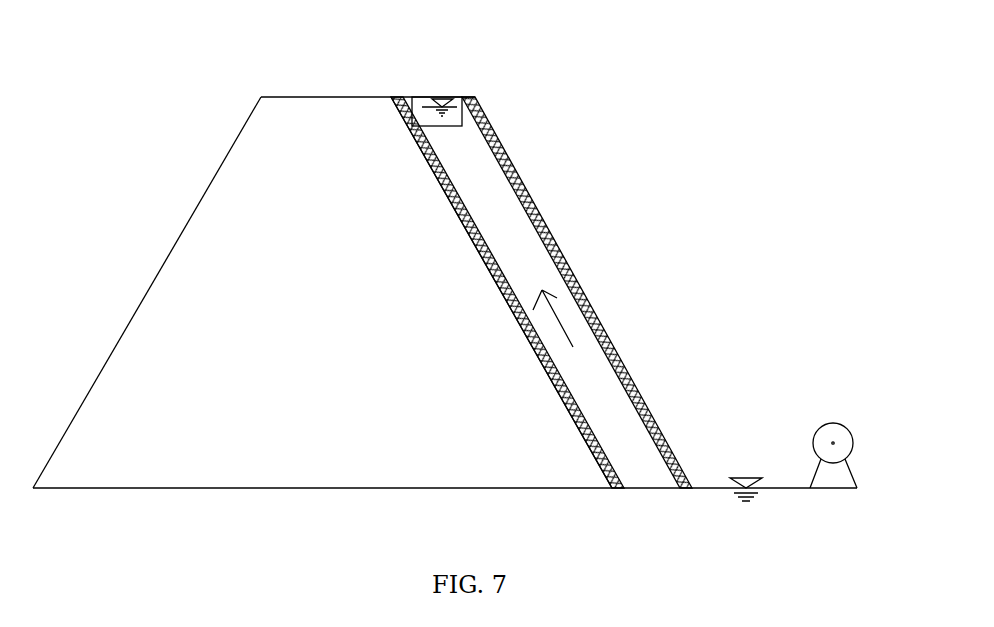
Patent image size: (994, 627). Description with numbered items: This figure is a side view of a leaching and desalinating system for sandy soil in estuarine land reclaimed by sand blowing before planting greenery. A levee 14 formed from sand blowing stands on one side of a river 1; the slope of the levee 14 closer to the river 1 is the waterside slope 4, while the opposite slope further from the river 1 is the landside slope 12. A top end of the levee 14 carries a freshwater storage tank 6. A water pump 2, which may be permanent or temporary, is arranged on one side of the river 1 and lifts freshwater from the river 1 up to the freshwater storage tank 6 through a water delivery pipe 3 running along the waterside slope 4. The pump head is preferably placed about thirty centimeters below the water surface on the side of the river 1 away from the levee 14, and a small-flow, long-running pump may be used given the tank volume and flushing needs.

The river 1 is at (775, 488).
The water pump 2 is at (833, 443).
The water delivery pipe 3 is at (587, 360).
The waterside slope 4 is at (582, 295).
The freshwater storage tank 6 is at (422, 107).
The landside slope 12 is at (146, 290).
The levee 14 is at (278, 223).